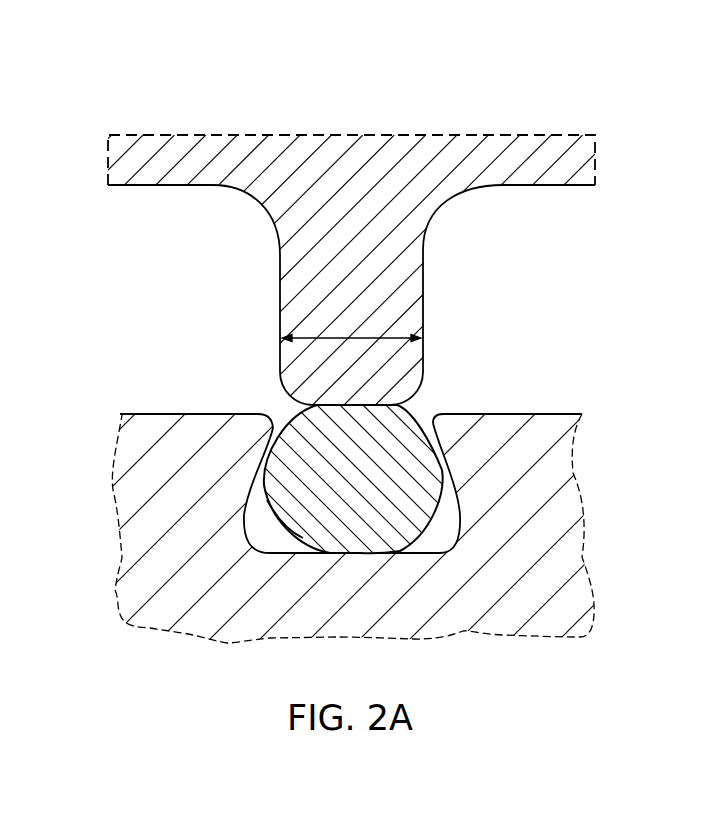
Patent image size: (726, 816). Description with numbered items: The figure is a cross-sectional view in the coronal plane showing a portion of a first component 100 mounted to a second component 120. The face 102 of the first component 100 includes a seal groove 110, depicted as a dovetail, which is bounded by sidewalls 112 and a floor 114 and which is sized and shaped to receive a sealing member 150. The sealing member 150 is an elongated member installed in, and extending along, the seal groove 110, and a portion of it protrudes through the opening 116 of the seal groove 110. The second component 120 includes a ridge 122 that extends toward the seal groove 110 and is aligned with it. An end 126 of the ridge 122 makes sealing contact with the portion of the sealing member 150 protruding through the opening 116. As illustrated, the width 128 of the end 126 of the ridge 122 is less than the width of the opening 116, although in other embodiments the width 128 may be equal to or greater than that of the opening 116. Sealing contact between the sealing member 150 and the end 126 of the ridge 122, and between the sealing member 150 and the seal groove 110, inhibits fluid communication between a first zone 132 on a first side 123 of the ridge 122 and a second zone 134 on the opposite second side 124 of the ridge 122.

The first component 100 is at (563, 395).
The face 102 is at (160, 414).
The seal groove 110 is at (607, 648).
The sidewalls 112 is at (252, 484).
The floor 114 is at (304, 553).
The opening 116 is at (428, 404).
The second component 120 is at (418, 141).
The ridge 122 is at (293, 222).
The first side 123 is at (424, 296).
The second side 124 is at (281, 286).
The end 126 is at (293, 392).
The width 128 is at (352, 337).
The first zone 132 is at (593, 264).
The second zone 134 is at (120, 288).
The sealing member 150 is at (372, 488).